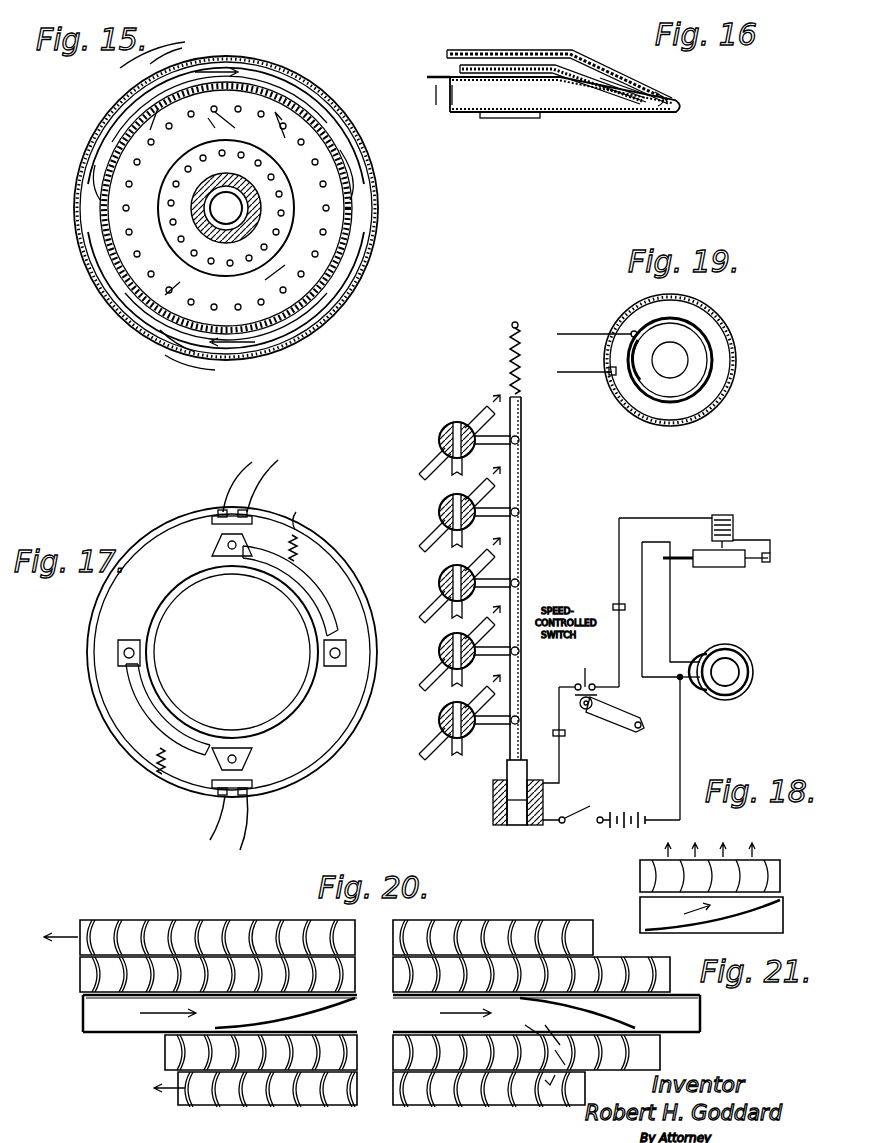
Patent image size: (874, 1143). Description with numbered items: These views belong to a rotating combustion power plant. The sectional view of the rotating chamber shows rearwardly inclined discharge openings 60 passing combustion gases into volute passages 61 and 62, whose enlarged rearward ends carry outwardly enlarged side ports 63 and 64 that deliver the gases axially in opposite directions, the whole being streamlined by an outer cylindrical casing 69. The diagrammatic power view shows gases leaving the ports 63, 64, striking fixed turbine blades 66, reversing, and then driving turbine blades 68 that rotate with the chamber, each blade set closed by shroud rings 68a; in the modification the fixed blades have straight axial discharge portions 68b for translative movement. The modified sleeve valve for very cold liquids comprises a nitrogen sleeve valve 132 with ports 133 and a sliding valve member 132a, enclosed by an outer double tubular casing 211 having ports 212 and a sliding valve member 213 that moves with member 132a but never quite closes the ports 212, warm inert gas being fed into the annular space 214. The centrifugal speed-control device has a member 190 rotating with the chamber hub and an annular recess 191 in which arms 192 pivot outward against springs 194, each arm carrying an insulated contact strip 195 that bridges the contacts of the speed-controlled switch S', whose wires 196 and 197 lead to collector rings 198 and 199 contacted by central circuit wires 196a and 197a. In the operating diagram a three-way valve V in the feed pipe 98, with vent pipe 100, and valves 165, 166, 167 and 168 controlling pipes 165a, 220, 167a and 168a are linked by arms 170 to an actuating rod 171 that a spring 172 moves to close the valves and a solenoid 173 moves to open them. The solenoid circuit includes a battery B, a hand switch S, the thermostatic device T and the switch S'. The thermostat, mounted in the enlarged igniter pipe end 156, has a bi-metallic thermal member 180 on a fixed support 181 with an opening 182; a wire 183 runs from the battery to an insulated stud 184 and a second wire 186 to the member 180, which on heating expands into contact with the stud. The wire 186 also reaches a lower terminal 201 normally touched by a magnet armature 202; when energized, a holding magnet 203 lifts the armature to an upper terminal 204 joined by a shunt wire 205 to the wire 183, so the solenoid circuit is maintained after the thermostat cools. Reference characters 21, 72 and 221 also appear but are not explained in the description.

In FIG. 15, the discharge openings 60 is at (108, 130).
In FIG. 15, the volute passage 61 is at (338, 308).
In FIG. 21, the volute passage 61 is at (711, 915).
In FIG. 20, the volute passage 61 is at (220, 1013).
In FIG. 15, the volute passage 62 is at (170, 80).
In FIG. 20, the volute passage 62 is at (546, 1013).
In FIG. 15, the side port 63 is at (272, 78).
In FIG. 20, the side port 63 is at (255, 998).
In FIG. 15, the side port 64 is at (163, 350).
In FIG. 20, the side port 64 is at (574, 1041).
In FIG. 20, the fixed turbine blades 66 is at (82, 968).
In FIG. 15, the outer cylindrical casing 69 is at (378, 216).
In FIG. 15, the perforations 72 is at (238, 100).
In FIG. 16, the base plate 21 is at (508, 122).
In FIG. 16, the nitrogen sleeve valve 132 is at (445, 72).
In FIG. 16, the sliding valve member 132a is at (426, 97).
In FIG. 16, the ports 133 is at (660, 88).
In FIG. 16, the outer double tubular casing 211 is at (566, 115).
In FIG. 16, the ports 212 is at (645, 70).
In FIG. 16, the sliding valve member 213 is at (464, 50).
In FIG. 16, the annular space 214 is at (580, 62).
In FIG. 19, the enlarged end of delivery pipe 156 is at (706, 308).
In FIG. 18, the enlarged end of delivery pipe 156 is at (723, 698).
In FIG. 19, the bi-metallic thermal member 180 is at (636, 404).
In FIG. 19, the fixed support 181 is at (670, 360).
In FIG. 19, the opening 182 is at (670, 360).
In FIG. 19, the wire 183 is at (562, 372).
In FIG. 18, the wire 183 is at (680, 752).
In FIG. 19, the insulated stud 184 is at (618, 380).
In FIG. 18, the insulated stud 184 is at (703, 690).
In FIG. 19, the second wire 186 is at (572, 332).
In FIG. 18, the second wire 186 is at (672, 600).
In FIG. 19, the thermostatic device T is at (718, 346).
In FIG. 18, the thermostatic device T is at (740, 664).
In FIG. 17, the member 190 is at (332, 757).
In FIG. 17, the annular recess 191 is at (237, 655).
In FIG. 17, the arms 192 is at (308, 582).
In FIG. 18, the arms 192 is at (625, 714).
In FIG. 17, the springs 194 is at (296, 524).
In FIG. 17, the insulated contact strip 195 is at (212, 538).
In FIG. 17, the wire 196 is at (268, 466).
In FIG. 18, the wire 196 is at (605, 678).
In FIG. 17, the wire 197 is at (250, 462).
In FIG. 18, the wire 197 is at (576, 683).
In FIG. 17, the speed controlled switch S' is at (246, 651).
In FIG. 18, the speed controlled switch S' is at (587, 667).
In FIG. 18, the feed pipe 98 is at (462, 696).
In FIG. 18, the vent pipe 100 is at (462, 750).
In FIG. 18, the three-way valve 165 is at (440, 651).
In FIG. 18, the pipe 165a is at (432, 674).
In FIG. 18, the three-way valve 166 is at (440, 583).
In FIG. 18, the three-way valve 167 is at (440, 512).
In FIG. 18, the pipe 167a is at (432, 534).
In FIG. 18, the three-way valve 168 is at (440, 440).
In FIG. 18, the pipe 168a is at (432, 462).
In FIG. 18, the arms 170 is at (497, 648).
In FIG. 18, the actuating rod 171 is at (522, 614).
In FIG. 18, the spring 172 is at (508, 366).
In FIG. 18, the solenoid 173 is at (496, 792).
In FIG. 18, the central circuit wire 196a is at (619, 553).
In FIG. 18, the central circuit wire 197a is at (560, 770).
In FIG. 18, the collector ring 198 is at (612, 606).
In FIG. 18, the collector ring 199 is at (565, 732).
In FIG. 18, the lower terminal 201 is at (672, 566).
In FIG. 18, the magnet armature 202 is at (718, 558).
In FIG. 18, the holding magnet 203 is at (732, 520).
In FIG. 18, the upper terminal 204 is at (670, 556).
In FIG. 18, the wire 205 is at (640, 655).
In FIG. 18, the pipe 220 is at (430, 606).
In FIG. 18, the pipe 221 is at (430, 628).
In FIG. 18, the three-way valve V is at (438, 720).
In FIG. 18, the hand switch S is at (576, 828).
In FIG. 18, the battery B is at (636, 830).
In FIG. 20, the turbine blades 68 is at (576, 934).
In FIG. 20, the shroud rings 68a is at (168, 1052).
In FIG. 21, the straight axial discharge portions 68b is at (642, 870).